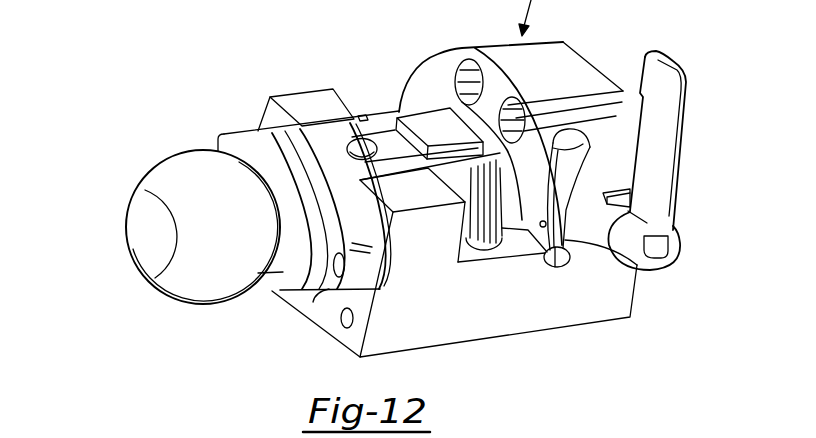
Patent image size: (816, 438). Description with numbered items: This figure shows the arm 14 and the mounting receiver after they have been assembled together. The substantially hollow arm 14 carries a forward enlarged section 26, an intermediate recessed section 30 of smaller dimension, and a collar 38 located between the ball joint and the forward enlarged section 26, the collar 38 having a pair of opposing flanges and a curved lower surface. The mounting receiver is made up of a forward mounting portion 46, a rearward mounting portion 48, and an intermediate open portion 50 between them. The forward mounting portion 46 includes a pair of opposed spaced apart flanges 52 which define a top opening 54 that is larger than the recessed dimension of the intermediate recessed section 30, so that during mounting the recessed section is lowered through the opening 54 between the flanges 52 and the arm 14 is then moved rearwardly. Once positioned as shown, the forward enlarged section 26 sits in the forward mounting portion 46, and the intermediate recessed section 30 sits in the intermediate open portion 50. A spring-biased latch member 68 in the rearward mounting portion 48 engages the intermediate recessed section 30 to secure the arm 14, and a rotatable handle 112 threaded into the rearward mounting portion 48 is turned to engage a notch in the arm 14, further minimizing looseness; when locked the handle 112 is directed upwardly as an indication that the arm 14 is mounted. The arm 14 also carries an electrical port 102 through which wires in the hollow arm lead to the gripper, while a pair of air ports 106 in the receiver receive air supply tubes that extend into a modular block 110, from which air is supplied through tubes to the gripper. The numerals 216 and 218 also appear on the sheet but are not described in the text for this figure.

The arm 14 is at (151, 140).
The forward enlarged section 26 is at (364, 154).
The intermediate recessed section 30 is at (478, 238).
The collar 38 is at (329, 289).
The forward mounting portion 46 is at (433, 333).
The rearward mounting portion 48 is at (573, 60).
The intermediate open portion 50 is at (532, 276).
The flanges 52 is at (294, 102).
The top opening 54 is at (366, 120).
The latch member 68 is at (566, 228).
The electrical port 102 is at (383, 137).
The air ports 106 is at (467, 77).
The modular block 110 is at (434, 118).
The handle 112 is at (668, 188).
The element 216 is at (527, 437).
The element 218 is at (668, 437).